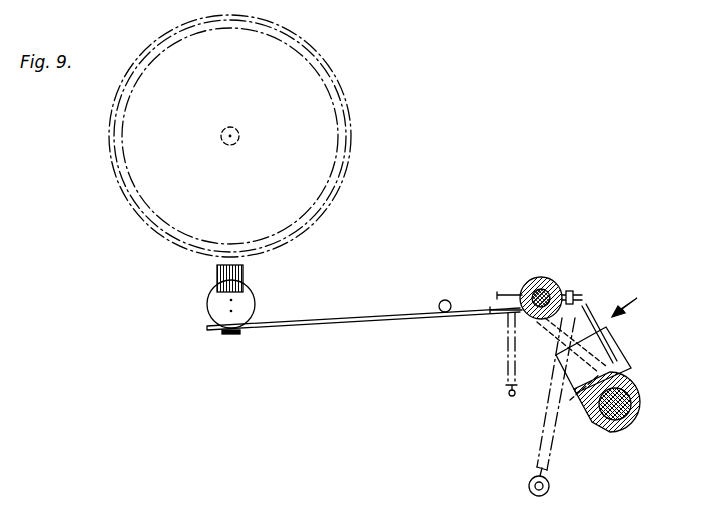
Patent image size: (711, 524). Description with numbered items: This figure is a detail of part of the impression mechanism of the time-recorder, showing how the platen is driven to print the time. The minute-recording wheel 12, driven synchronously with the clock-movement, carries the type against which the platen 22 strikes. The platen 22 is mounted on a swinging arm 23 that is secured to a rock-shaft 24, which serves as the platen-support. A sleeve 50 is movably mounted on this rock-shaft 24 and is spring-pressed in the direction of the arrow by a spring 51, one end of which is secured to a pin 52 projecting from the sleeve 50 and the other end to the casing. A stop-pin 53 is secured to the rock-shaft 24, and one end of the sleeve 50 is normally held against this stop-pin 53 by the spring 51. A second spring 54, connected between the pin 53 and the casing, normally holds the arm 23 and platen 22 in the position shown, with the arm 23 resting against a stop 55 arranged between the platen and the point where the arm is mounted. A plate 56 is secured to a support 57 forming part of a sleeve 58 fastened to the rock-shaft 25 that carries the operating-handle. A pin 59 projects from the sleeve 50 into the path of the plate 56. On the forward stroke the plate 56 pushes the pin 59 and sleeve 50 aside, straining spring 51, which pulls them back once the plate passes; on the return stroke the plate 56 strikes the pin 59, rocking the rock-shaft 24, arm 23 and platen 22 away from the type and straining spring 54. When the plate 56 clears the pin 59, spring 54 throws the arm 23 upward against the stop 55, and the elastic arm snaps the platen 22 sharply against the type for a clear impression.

The minute-recording wheel 12 is at (349, 168).
The platen 22 is at (243, 272).
The swinging arm 23 is at (375, 319).
The rock-shaft 24 is at (552, 286).
The rock-shaft 25 is at (617, 420).
The sleeve 50 is at (531, 281).
The spring 51 is at (494, 354).
The pin 52 is at (516, 297).
The stop-pin 53 is at (575, 294).
The spring 54 is at (557, 443).
The stop 55 is at (446, 300).
The plate 56 is at (586, 318).
The support 57 is at (617, 344).
The sleeve 58 is at (643, 393).
The pin 59 is at (562, 338).